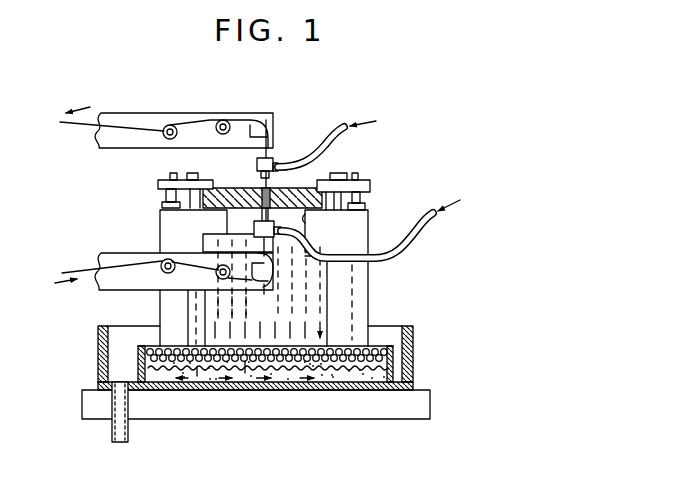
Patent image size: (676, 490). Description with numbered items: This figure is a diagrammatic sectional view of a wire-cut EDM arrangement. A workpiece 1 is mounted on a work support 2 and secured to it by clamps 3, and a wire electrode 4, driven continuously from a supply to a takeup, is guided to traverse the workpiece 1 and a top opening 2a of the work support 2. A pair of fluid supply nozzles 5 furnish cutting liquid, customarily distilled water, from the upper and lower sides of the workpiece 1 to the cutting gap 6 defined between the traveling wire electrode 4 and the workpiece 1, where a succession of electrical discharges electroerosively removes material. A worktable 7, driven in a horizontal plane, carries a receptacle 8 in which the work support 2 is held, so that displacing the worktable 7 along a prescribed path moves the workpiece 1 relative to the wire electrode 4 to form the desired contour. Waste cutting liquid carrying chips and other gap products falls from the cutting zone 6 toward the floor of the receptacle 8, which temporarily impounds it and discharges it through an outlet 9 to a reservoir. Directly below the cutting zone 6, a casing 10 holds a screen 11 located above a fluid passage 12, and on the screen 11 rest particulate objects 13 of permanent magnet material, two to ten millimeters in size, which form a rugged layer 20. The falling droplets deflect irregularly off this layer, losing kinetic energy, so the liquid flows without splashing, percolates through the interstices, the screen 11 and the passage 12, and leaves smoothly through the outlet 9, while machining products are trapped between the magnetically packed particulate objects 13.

The workpiece 1 is at (298, 188).
The work support 2 is at (160, 225).
The top opening 2a is at (331, 231).
The clamps 3 is at (158, 183).
The wire electrode 4 is at (242, 113).
The fluid supply nozzles 5 is at (276, 162).
The cutting gap 6 is at (258, 191).
The worktable 7 is at (352, 408).
The receptacle 8 is at (413, 344).
The outlet 9 is at (110, 427).
The casing 10 is at (393, 370).
The screen 11 is at (213, 364).
The fluid passage 12 is at (247, 381).
The particulate objects of permanent magnet material 13 is at (322, 351).
The rugged layer 20 is at (173, 340).